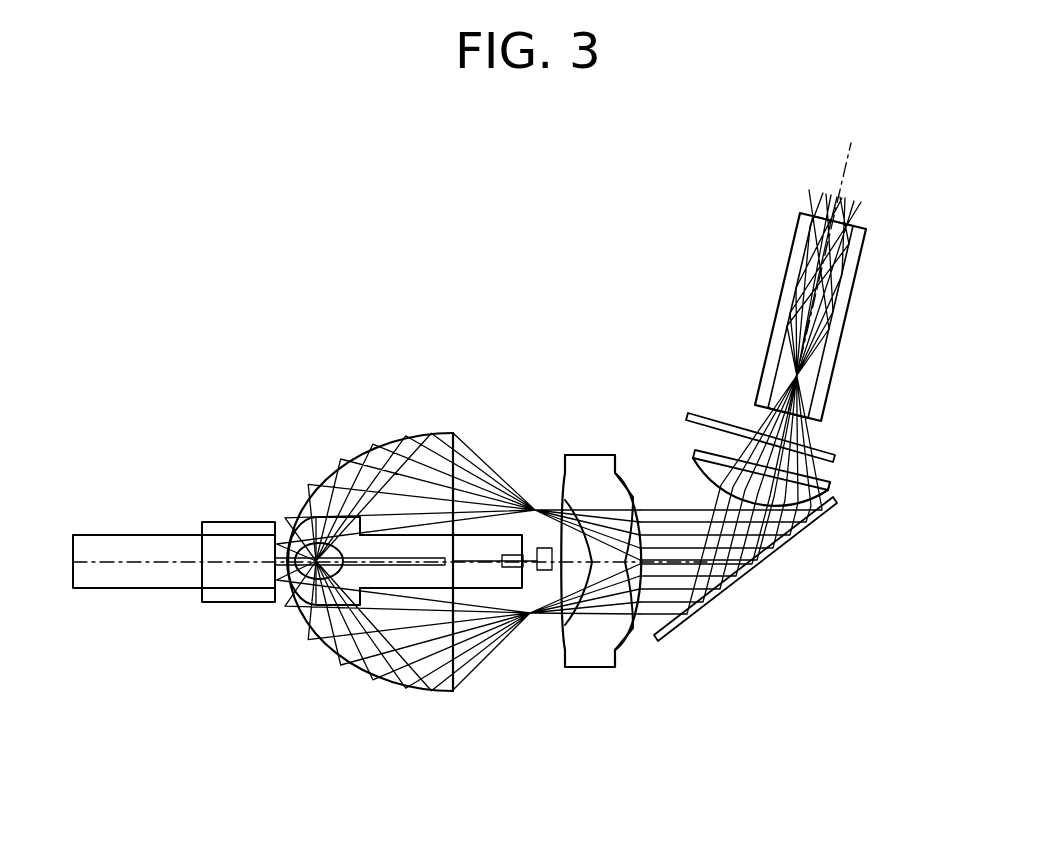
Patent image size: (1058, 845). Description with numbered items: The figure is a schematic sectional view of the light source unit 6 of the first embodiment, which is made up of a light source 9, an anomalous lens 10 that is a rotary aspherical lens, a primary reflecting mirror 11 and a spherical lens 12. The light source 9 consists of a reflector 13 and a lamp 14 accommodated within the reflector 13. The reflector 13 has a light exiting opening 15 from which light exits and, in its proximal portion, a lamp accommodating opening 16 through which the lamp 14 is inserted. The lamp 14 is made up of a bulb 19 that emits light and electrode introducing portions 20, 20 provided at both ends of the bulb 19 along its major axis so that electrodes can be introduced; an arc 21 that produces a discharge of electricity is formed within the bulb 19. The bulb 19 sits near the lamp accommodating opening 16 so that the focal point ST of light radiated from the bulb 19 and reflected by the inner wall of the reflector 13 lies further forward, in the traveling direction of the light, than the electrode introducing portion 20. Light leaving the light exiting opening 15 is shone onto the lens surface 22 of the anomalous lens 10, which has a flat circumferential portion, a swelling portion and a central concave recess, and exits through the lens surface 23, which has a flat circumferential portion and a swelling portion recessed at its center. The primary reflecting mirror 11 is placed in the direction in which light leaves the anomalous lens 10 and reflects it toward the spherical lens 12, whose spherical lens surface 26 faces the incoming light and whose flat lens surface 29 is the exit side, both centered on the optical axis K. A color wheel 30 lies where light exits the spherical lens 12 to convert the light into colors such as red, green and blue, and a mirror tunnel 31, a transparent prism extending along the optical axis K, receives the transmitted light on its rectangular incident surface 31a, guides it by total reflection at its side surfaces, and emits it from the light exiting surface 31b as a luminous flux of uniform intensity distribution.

The light source unit 6 is at (498, 265).
The light source 9 is at (360, 343).
The anomalous lens 10 is at (606, 597).
The primary reflecting mirror 11 is at (768, 558).
The spherical lens 12 is at (771, 463).
The reflector 13 is at (372, 683).
The lamp 14 is at (268, 615).
The light exiting opening 15 is at (458, 685).
The lamp accommodating opening 16 is at (198, 597).
The bulb 19 is at (293, 545).
The electrode introducing portion 20 is at (108, 535).
The arc 21 is at (290, 530).
The lens surface 22 is at (563, 647).
The lens surface 23 is at (617, 645).
The lens surface 26 is at (702, 482).
The lens surface 29 is at (827, 478).
The color wheel 30 is at (688, 417).
The mirror tunnel 31 is at (821, 304).
The incident surface 31a is at (800, 427).
The light exiting surface 31b is at (850, 193).
The focal point ST is at (537, 507).
The optical axis K is at (663, 565).